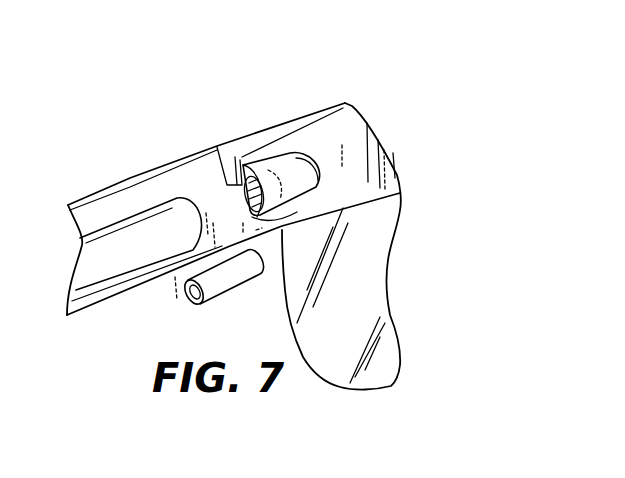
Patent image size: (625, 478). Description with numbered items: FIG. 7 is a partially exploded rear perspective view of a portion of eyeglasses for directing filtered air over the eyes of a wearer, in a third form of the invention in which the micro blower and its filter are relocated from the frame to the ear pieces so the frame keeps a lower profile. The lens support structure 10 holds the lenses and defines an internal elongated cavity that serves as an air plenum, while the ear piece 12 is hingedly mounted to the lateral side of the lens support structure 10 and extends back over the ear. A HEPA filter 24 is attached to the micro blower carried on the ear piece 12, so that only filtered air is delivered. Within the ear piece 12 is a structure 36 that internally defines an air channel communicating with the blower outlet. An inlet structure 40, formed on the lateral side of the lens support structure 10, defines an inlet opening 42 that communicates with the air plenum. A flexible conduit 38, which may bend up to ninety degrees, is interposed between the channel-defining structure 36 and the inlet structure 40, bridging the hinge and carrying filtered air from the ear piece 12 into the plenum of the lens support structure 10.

The lens support structure 10 is at (267, 120).
The ear piece 12 is at (78, 200).
The HEPA filter 24 is at (275, 173).
The structure defining an air channel 36 is at (95, 269).
The flexible conduit 38 is at (229, 293).
The inlet structure 40 is at (258, 167).
The inlet opening 42 is at (284, 214).